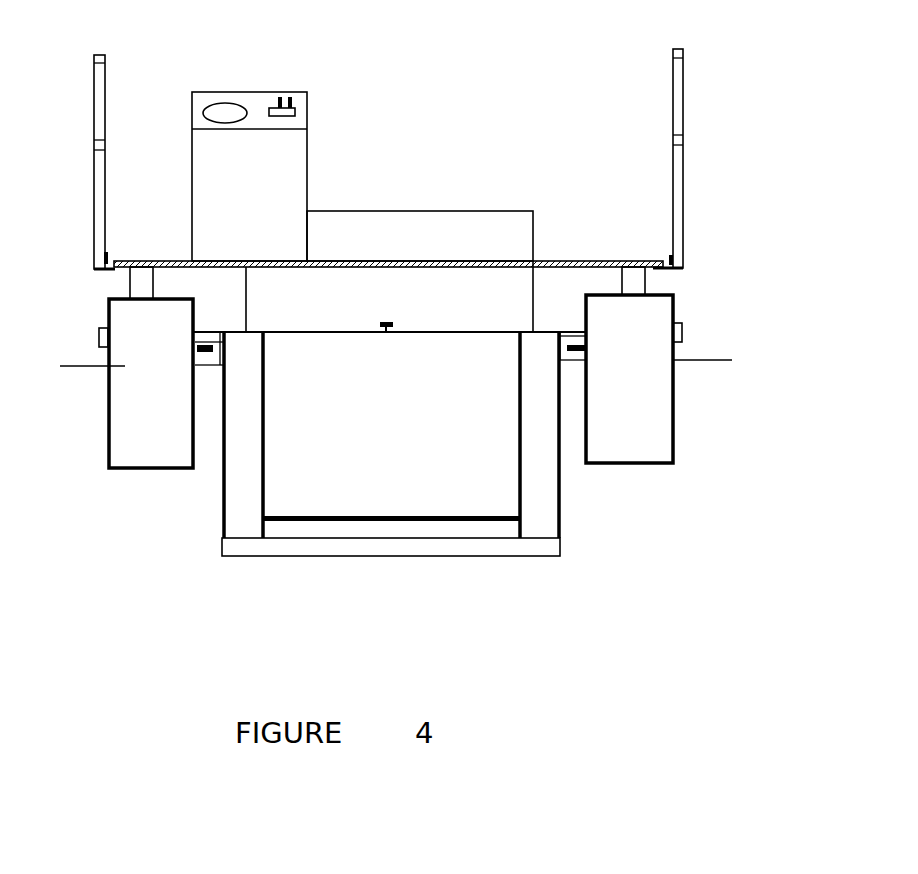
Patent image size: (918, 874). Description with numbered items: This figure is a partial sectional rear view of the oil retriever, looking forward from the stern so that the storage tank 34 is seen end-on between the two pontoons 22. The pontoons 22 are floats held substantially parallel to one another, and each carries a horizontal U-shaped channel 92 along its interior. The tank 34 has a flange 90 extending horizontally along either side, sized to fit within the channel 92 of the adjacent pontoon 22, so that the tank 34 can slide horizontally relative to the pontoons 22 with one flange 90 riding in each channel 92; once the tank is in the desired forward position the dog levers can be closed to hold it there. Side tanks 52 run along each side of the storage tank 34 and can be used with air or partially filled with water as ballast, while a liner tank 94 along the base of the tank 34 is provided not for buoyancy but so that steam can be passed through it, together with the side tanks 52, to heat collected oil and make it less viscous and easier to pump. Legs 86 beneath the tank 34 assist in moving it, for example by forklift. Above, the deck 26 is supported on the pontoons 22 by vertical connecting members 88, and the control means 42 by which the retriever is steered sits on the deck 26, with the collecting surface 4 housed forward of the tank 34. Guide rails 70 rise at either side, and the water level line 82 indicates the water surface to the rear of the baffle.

The collecting surface 4 is at (400, 228).
The pontoon 22 is at (109, 393).
The deck 26 is at (610, 260).
The storage tank 34 is at (332, 458).
The control means 42 is at (300, 147).
The side tanks 52 is at (243, 517).
The guide rail 70 is at (678, 85).
The water level line 82 is at (97, 365).
The legs 86 is at (303, 550).
The vertical connecting members 88 is at (635, 280).
The flange 90 is at (585, 320).
The U-shaped channel 92 is at (213, 322).
The liner tank 94 is at (453, 528).